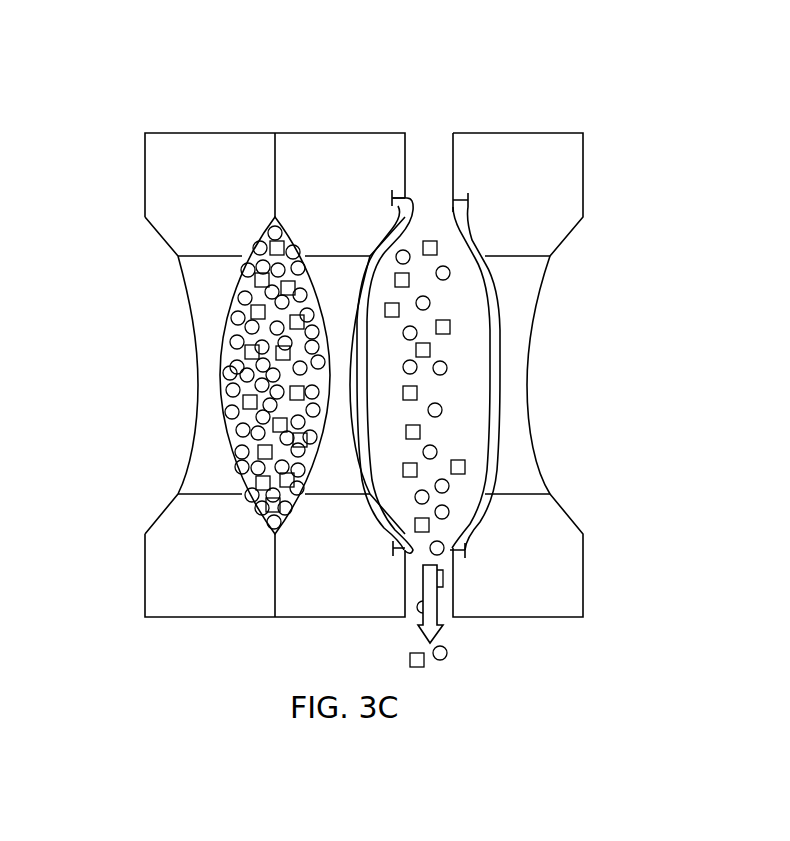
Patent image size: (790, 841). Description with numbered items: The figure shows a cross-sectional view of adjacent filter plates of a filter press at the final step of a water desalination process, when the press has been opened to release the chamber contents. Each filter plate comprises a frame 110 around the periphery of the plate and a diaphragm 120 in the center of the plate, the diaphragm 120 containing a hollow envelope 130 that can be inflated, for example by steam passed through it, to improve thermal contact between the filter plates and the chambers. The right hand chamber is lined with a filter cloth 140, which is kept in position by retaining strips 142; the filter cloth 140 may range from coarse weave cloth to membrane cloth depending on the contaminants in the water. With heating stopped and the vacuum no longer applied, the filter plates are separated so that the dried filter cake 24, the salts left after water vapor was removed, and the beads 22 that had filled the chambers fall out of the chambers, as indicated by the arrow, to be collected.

The frame 110 is at (183, 212).
The diaphragm 120 is at (200, 385).
The hollow envelope 130 is at (210, 410).
The filter cloth 140 is at (460, 238).
The retaining strip 142 is at (470, 198).
The beads 22 is at (442, 405).
The dried filter cake 24 is at (452, 320).